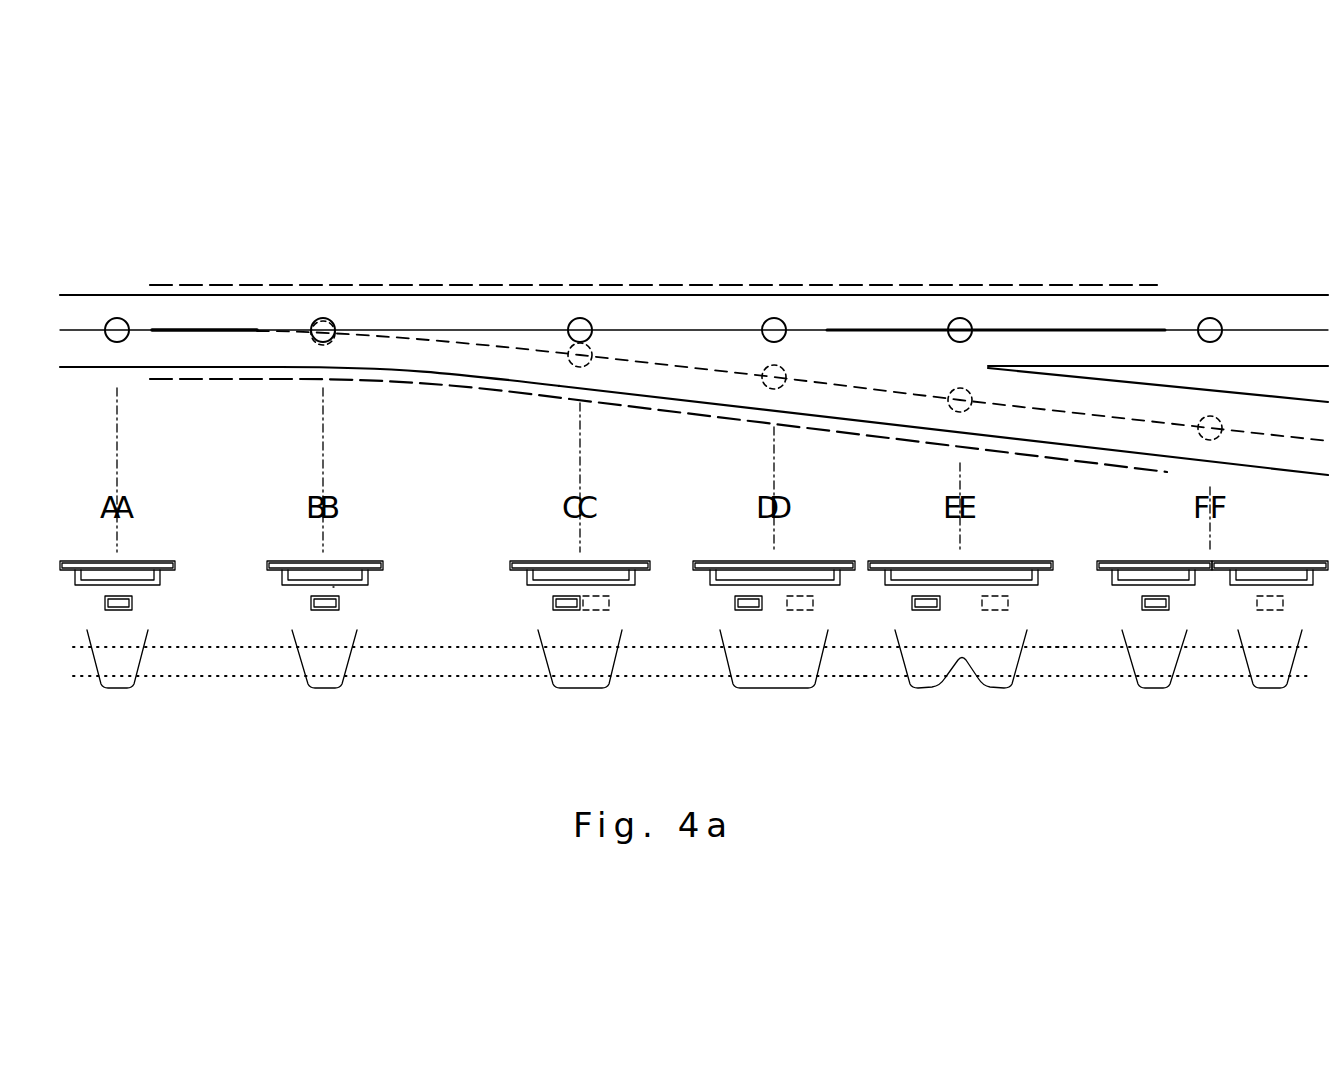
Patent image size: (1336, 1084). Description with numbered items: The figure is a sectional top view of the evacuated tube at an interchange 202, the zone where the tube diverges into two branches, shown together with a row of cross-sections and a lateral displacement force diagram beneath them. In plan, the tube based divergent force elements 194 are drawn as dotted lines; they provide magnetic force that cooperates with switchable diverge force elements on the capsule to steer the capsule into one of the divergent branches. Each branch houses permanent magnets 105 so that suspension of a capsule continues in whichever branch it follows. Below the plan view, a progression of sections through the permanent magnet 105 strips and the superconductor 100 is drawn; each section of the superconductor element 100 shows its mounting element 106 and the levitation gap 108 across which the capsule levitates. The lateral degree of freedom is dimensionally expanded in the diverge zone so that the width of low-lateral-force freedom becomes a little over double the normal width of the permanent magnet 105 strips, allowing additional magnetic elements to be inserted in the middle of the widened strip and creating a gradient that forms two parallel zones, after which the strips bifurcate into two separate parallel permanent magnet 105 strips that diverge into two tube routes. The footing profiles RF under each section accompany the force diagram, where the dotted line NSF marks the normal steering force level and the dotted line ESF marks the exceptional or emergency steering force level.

The interchange 202 is at (1072, 205).
The tube based divergent force elements 194 is at (355, 285).
The permanent magnets 105 is at (822, 393).
The superconductor element 100 is at (960, 328).
The mounting element 106 is at (157, 562).
The levitation gap 108 is at (333, 587).
The rail footing RF is at (728, 662).
The normal steering force level NSF is at (842, 678).
The exceptional or emergency steering force level ESF is at (1047, 650).